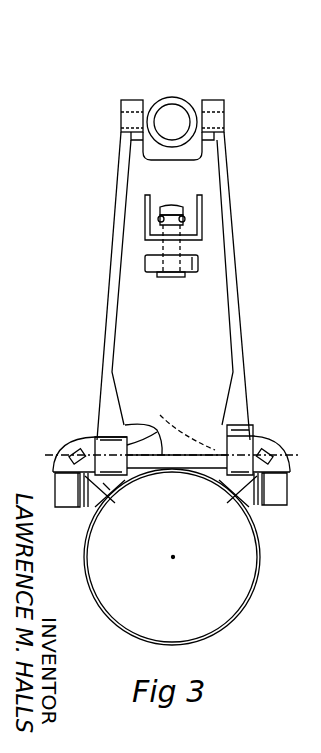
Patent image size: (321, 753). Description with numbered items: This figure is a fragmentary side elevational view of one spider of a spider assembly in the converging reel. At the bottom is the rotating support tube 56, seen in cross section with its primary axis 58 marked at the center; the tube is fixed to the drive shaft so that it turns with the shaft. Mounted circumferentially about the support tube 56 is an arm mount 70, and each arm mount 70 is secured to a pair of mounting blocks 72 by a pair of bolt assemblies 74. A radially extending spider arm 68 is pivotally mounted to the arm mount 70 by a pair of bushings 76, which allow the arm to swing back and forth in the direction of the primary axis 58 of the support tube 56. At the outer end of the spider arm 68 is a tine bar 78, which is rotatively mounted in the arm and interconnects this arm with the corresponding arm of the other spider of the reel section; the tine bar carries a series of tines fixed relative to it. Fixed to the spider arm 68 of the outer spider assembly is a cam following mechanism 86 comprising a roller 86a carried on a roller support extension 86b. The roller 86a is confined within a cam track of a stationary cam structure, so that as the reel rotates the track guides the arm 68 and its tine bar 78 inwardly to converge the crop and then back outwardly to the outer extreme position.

The support tube 56 is at (262, 573).
The primary axis 58 is at (173, 557).
The spider arm 68 is at (233, 237).
The arm mount 70 is at (80, 440).
The mounting block 72 is at (90, 502).
The bolt assembly 74 is at (300, 446).
The bushing 76 is at (155, 430).
The tine bar 78 is at (172, 105).
The cam following mechanism 86 is at (205, 213).
The roller 86a is at (143, 262).
The roller support extension 86b is at (140, 227).